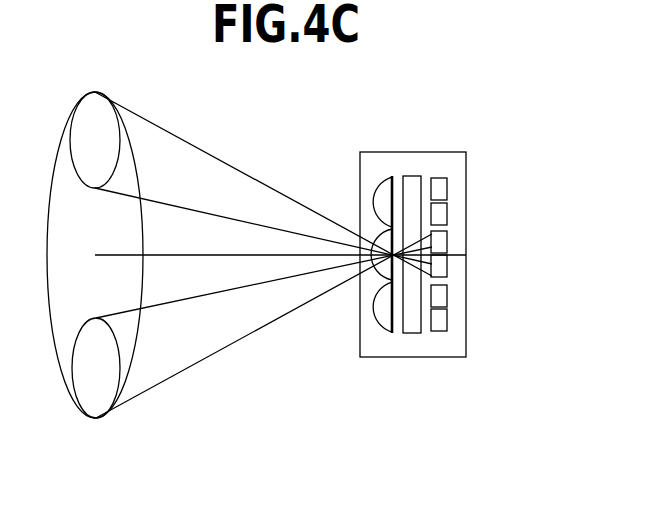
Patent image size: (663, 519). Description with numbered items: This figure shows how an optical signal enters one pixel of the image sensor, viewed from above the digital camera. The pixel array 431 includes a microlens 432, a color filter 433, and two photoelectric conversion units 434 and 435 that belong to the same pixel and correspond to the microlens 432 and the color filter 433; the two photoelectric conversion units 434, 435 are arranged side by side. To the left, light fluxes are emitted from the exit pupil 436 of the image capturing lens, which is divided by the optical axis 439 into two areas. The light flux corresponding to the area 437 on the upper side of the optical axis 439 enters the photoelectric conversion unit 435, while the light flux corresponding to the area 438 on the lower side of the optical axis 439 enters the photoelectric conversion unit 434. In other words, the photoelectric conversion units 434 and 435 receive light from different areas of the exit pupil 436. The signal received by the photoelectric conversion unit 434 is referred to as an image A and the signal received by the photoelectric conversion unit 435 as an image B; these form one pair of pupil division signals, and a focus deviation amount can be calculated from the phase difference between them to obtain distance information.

The pixel array 431 is at (466, 170).
The microlens 432 is at (377, 180).
The color filter 433 is at (412, 176).
The photoelectric conversion unit 434 is at (448, 240).
The photoelectric conversion unit 435 is at (448, 268).
The exit pupil 436 is at (143, 176).
The area 437 is at (97, 91).
The area 438 is at (113, 333).
The optical axis 439 is at (237, 255).